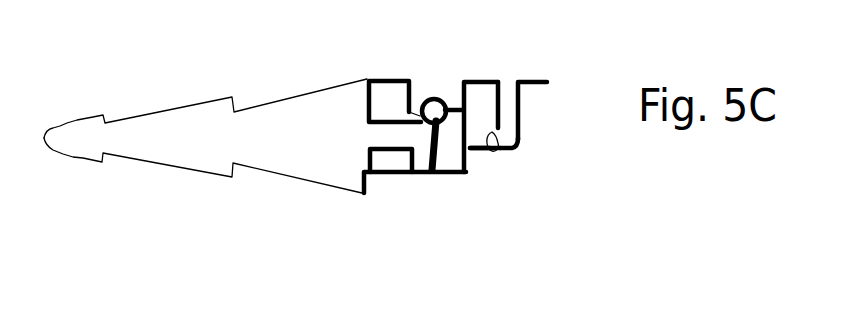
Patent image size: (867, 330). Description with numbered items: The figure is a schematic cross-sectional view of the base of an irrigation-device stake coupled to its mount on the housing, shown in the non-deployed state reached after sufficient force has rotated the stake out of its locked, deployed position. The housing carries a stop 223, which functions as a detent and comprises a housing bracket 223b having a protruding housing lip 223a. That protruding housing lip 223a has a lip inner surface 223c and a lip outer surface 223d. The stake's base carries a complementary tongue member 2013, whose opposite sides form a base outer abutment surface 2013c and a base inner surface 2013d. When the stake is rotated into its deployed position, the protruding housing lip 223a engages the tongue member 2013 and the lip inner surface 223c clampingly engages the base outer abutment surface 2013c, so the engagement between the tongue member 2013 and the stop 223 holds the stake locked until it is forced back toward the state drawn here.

The tongue member 2013 is at (430, 192).
The base outer abutment surface 2013c is at (413, 158).
The base inner surface 2013d is at (436, 157).
The stop 223 is at (524, 133).
The protruding housing lip 223a is at (498, 136).
The housing bracket 223b is at (510, 101).
The lip inner surface 223c is at (492, 132).
The lip outer surface 223d is at (492, 152).